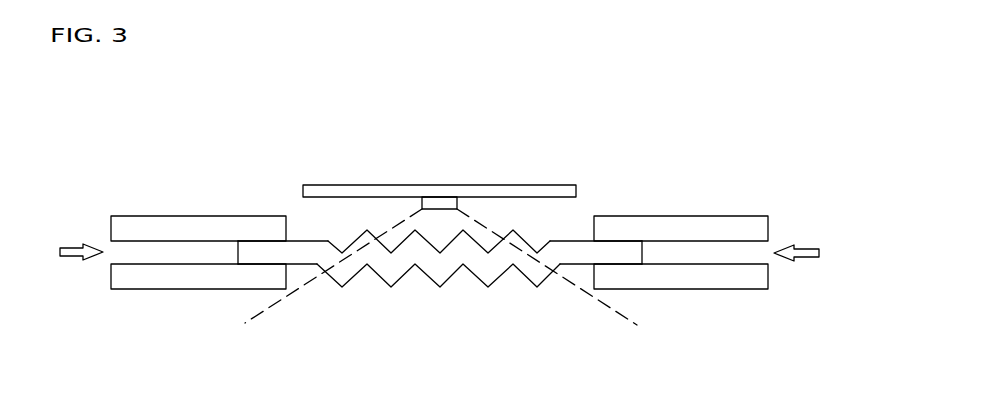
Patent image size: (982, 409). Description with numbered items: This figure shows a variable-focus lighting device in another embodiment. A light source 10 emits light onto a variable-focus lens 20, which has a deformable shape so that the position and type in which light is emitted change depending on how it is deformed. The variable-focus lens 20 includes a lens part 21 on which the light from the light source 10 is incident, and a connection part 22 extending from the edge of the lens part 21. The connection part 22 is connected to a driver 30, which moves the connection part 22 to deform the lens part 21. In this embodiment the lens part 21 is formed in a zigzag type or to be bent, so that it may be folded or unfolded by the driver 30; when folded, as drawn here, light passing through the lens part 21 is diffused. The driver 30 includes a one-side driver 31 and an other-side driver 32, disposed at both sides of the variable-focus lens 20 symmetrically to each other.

The light source 10 is at (403, 178).
The variable-focus lens 20 is at (438, 312).
The lens part 21 is at (387, 282).
The connection part 22 is at (263, 250).
The driver 30 is at (439, 188).
The one-side driver 31 is at (158, 196).
The other-side driver 32 is at (722, 197).